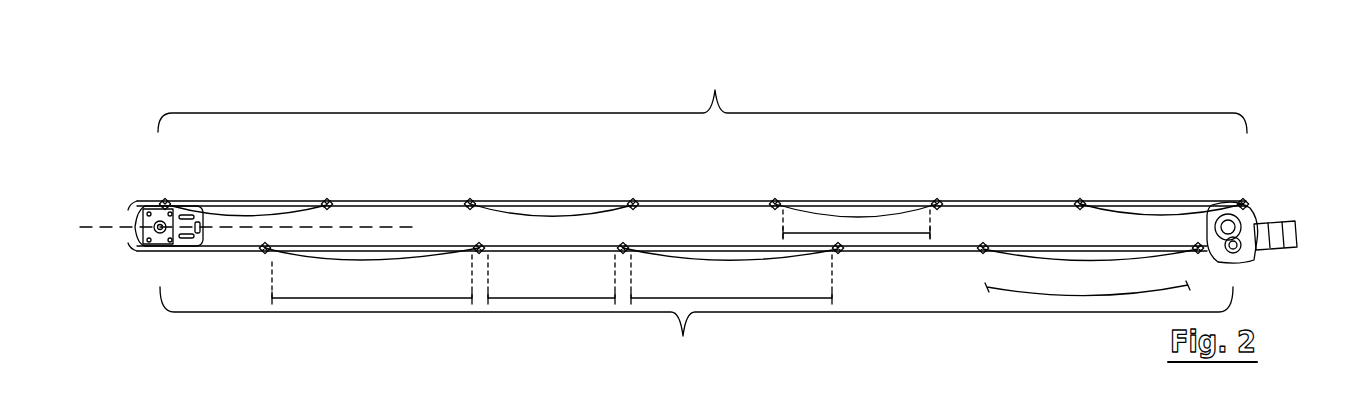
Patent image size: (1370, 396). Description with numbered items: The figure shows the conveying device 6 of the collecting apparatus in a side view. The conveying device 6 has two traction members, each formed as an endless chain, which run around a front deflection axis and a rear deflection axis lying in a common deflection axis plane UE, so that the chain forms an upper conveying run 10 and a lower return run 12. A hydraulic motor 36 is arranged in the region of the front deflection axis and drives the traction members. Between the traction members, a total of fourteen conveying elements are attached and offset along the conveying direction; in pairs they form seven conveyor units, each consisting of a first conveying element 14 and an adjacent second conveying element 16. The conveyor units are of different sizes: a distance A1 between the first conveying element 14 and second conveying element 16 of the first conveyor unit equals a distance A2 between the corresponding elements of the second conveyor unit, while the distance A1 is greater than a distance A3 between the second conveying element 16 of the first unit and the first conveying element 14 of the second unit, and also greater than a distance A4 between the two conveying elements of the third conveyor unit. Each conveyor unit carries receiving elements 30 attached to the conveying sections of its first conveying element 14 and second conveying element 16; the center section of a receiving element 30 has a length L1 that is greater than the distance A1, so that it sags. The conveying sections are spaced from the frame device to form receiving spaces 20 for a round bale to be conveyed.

The conveying device 6 is at (1078, 62).
The upper conveying run 10 is at (702, 93).
The lower return run 12 is at (696, 334).
The first conveying element 14 is at (267, 246).
The second conveying element 16 is at (165, 199).
The receiving space 20 is at (244, 210).
The receiving element 30 is at (222, 212).
The hydraulic motor 36 is at (1246, 236).
The deflection axis plane UE is at (125, 227).
The distance between the conveying elements of the first conveyor unit A1 is at (372, 279).
The distance between the conveying elements of the second conveyor unit A2 is at (731, 279).
The distance between the first and second conveyor units A3 is at (551, 279).
The distance between the conveying elements of the third conveyor unit A4 is at (875, 235).
The length of the center section of the receiving element L1 is at (1087, 284).